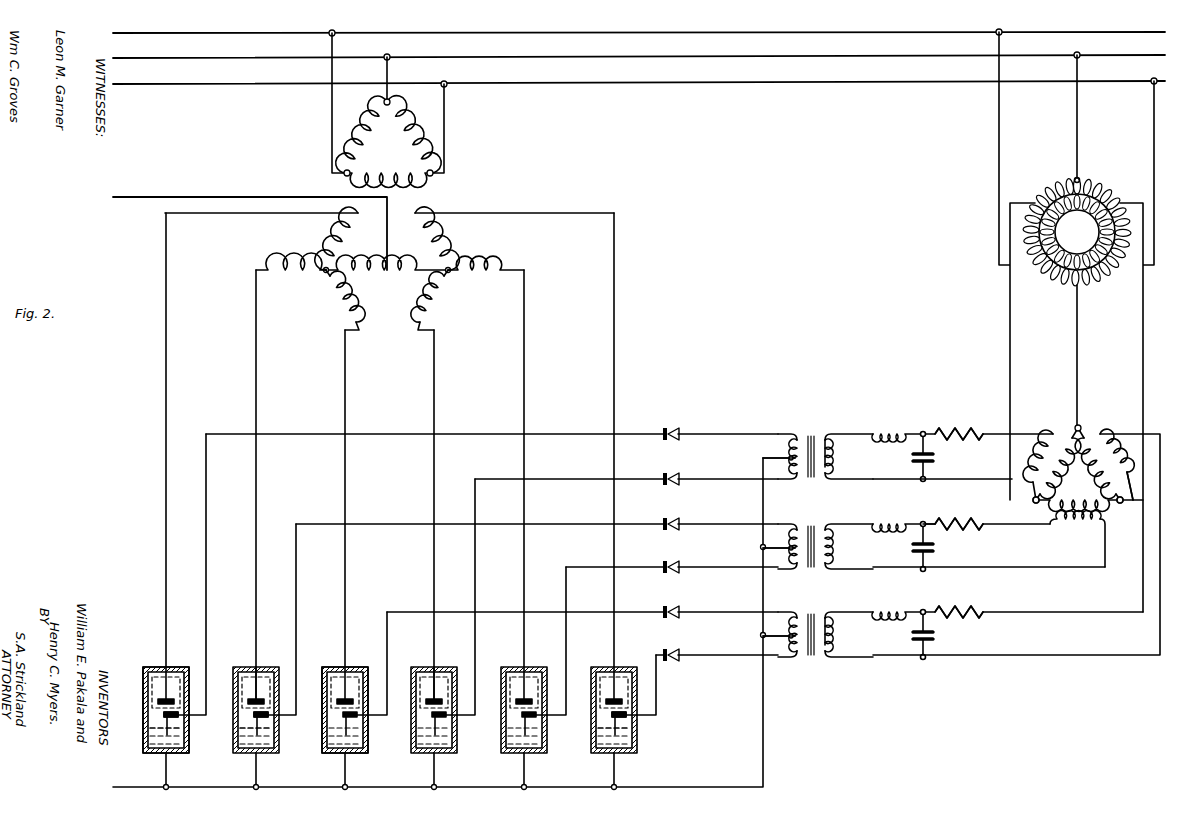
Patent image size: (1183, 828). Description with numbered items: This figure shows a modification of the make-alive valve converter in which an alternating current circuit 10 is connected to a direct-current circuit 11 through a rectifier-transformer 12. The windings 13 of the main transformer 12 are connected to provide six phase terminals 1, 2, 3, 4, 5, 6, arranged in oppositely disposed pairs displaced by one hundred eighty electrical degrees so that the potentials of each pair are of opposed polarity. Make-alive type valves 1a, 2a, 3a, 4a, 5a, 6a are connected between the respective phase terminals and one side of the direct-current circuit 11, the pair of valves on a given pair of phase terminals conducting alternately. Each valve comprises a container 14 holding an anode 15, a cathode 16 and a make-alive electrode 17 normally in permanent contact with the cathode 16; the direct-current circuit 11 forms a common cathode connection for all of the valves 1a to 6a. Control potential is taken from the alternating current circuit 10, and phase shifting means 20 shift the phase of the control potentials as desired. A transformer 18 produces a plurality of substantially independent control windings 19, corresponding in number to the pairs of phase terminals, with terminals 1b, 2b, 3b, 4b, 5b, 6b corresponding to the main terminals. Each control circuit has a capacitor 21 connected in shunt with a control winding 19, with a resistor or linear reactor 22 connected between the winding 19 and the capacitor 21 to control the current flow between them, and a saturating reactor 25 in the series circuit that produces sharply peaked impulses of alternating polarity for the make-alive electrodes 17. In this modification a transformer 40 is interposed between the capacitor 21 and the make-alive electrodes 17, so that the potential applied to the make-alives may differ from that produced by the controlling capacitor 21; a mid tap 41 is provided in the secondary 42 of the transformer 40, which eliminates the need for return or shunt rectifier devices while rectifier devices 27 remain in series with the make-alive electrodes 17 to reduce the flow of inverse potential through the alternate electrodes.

The alternating current circuit 10 is at (681, 85).
The direct-current circuit 11 is at (148, 201).
The rectifier-transformer 12 is at (458, 193).
The windings 13 is at (394, 308).
The phase terminal 1 is at (274, 268).
The phase terminal 2 is at (427, 220).
The phase terminal 3 is at (350, 220).
The phase terminal 4 is at (499, 267).
The phase terminal 5 is at (357, 324).
The phase terminal 6 is at (428, 324).
The make-alive type valve 1a is at (246, 663).
The make-alive type valve 2a is at (605, 663).
The make-alive type valve 3a is at (152, 663).
The make-alive type valve 4a is at (515, 663).
The make-alive type valve 5a is at (336, 663).
The make-alive type valve 6a is at (425, 663).
The container 14 is at (145, 702).
The anode 15 is at (247, 694).
The cathode 16 is at (182, 740).
The make-alive electrode 17 is at (183, 723).
The rectifier device 27 is at (681, 433).
The transformer 40 is at (828, 425).
The mid tap 41 is at (790, 458).
The secondary 42 is at (796, 438).
The saturating reactor 25 is at (876, 432).
The resistor or linear reactor 22 is at (972, 432).
The capacitor 21 is at (934, 459).
The transformer 18 is at (1082, 493).
The control winding 19 is at (1121, 465).
The phase shifting means 20 is at (1088, 241).
The control winding terminal 1b is at (1062, 526).
The control winding terminal 2b is at (1100, 432).
The control winding terminal 3b is at (1053, 432).
The control winding terminal 4b is at (1102, 526).
The control winding terminal 5b is at (1128, 503).
The control winding terminal 6b is at (1026, 494).